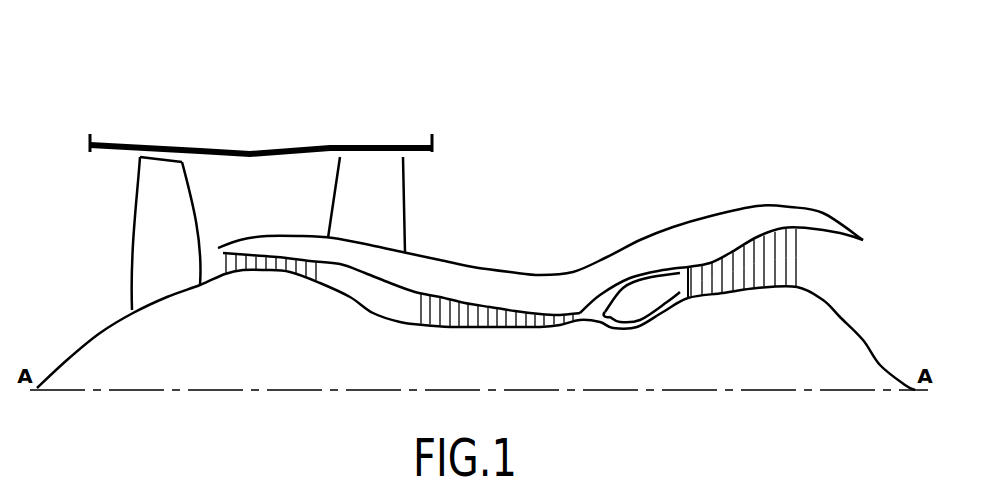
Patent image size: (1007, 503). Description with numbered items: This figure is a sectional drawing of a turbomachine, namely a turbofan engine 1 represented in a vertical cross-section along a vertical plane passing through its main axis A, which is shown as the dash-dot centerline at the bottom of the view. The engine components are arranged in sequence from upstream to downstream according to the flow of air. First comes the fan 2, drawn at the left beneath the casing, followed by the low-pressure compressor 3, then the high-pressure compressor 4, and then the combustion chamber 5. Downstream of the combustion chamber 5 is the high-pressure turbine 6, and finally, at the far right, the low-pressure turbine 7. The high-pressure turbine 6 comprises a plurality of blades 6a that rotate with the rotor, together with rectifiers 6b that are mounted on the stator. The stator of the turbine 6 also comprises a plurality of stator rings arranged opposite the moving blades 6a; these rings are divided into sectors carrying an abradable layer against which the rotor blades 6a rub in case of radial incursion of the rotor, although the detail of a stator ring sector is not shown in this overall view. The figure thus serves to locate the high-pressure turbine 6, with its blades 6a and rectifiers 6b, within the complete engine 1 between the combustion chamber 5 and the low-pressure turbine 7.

The turbofan engine 1 is at (575, 119).
The fan 2 is at (157, 222).
The low-pressure compressor 3 is at (256, 238).
The high-pressure compressor 4 is at (475, 298).
The combustion chamber 5 is at (633, 297).
The high-pressure turbine 6 is at (784, 258).
The blades 6a is at (732, 280).
The rectifiers 6b is at (716, 268).
The low-pressure turbine 7 is at (765, 205).